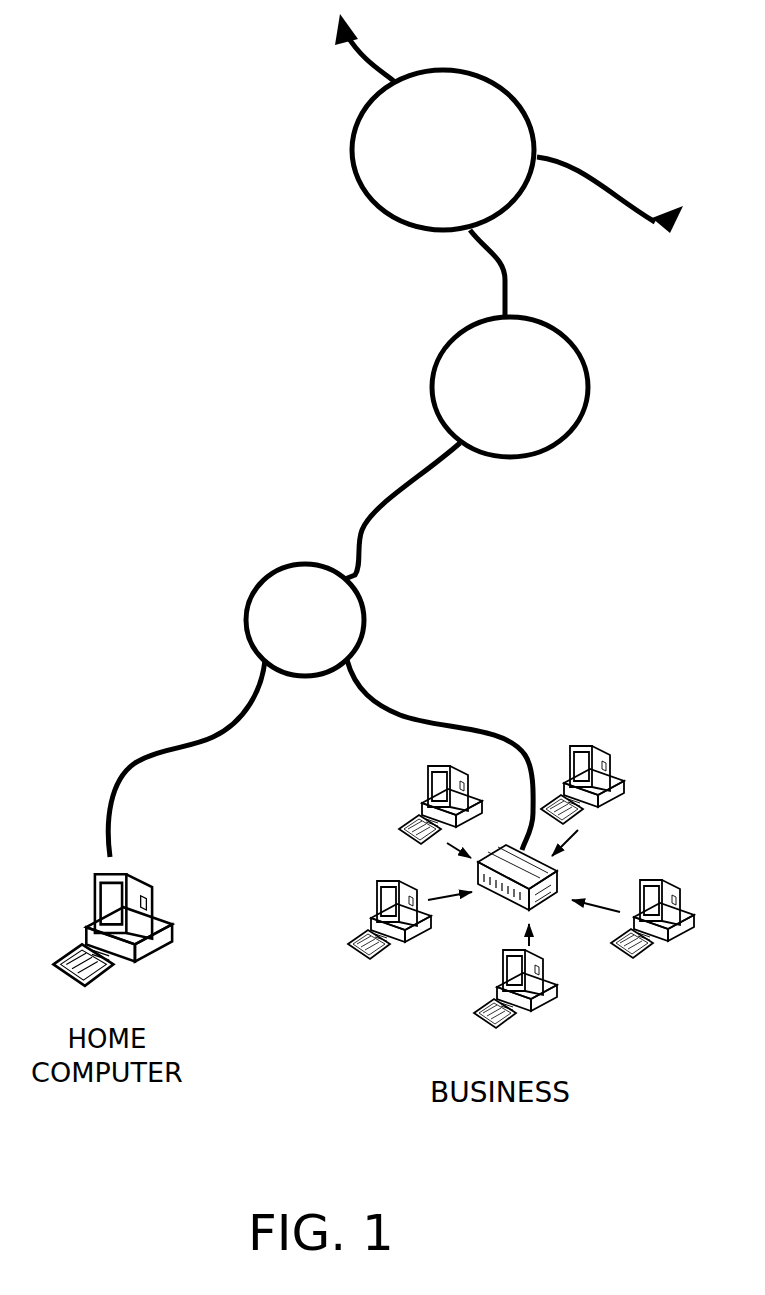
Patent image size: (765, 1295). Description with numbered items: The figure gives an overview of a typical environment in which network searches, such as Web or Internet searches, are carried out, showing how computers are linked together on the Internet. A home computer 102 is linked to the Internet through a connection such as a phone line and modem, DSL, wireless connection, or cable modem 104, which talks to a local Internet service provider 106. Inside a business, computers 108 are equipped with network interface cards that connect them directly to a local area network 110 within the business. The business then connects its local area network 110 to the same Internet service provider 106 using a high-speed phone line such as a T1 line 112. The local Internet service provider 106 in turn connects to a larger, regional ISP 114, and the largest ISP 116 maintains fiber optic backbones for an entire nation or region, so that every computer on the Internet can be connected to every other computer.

The home computer 102 is at (170, 952).
The cable modem 104 is at (202, 738).
The Internet service provider 106 is at (307, 565).
The business computers 108 is at (563, 995).
The local area network 110 is at (547, 867).
The T1 line 112 is at (446, 727).
The larger ISP 114 is at (583, 357).
The largest ISP 116 is at (533, 132).